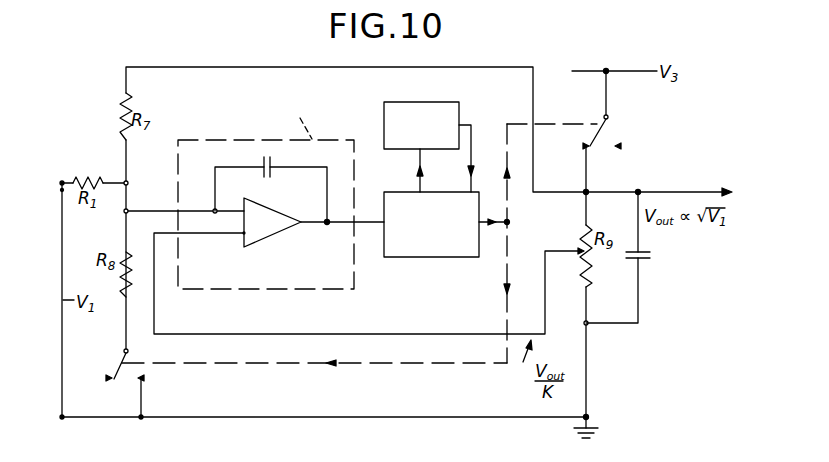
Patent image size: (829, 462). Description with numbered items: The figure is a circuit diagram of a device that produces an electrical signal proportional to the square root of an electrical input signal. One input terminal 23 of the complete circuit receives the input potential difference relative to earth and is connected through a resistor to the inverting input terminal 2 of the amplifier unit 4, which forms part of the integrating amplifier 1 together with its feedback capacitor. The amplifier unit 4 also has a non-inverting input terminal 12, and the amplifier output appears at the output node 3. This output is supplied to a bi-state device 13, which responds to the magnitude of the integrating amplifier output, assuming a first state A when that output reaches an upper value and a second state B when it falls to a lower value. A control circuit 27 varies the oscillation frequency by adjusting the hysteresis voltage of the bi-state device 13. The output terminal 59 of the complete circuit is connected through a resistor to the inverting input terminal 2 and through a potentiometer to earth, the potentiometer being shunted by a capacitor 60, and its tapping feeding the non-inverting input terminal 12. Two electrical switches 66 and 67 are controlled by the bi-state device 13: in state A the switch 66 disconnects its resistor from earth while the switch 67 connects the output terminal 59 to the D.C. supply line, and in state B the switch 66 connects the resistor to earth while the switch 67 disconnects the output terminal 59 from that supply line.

The input terminal 23 is at (64, 180).
The integrating amplifier 1 is at (350, 140).
The inverting input terminal 2 is at (217, 210).
The output node 3 is at (326, 226).
The amplifier unit 4 is at (266, 240).
The non-inverting input terminal 12 is at (219, 236).
The control circuit 27 is at (460, 110).
The bi-state device 13 is at (450, 258).
The electrical switch 67 is at (612, 126).
The output terminal 59 is at (591, 191).
The capacitor 60 is at (645, 259).
The electrical switch 66 is at (114, 380).